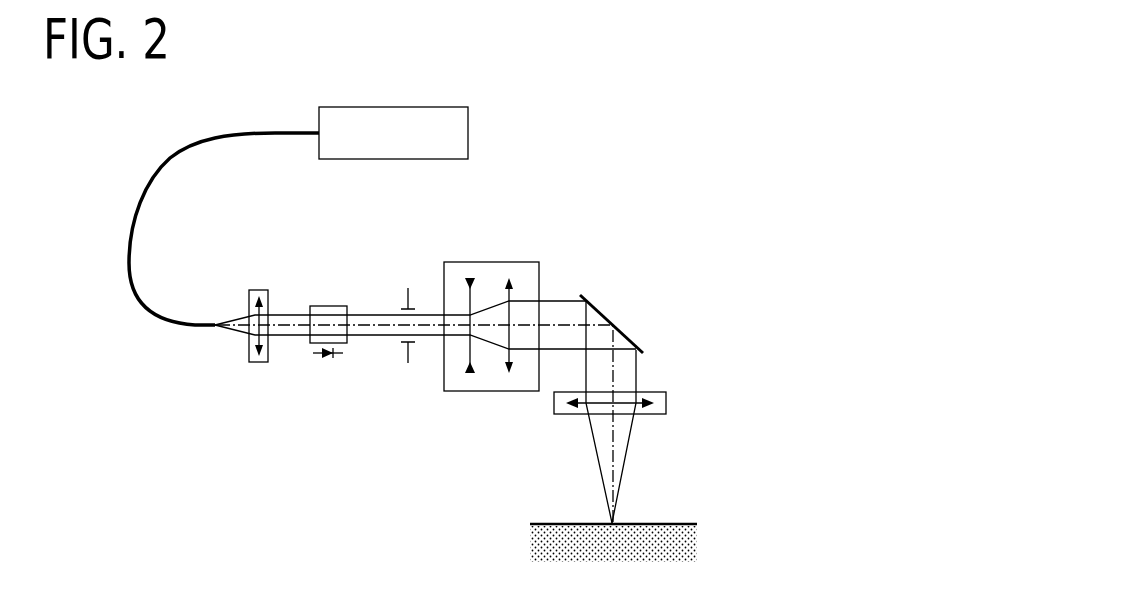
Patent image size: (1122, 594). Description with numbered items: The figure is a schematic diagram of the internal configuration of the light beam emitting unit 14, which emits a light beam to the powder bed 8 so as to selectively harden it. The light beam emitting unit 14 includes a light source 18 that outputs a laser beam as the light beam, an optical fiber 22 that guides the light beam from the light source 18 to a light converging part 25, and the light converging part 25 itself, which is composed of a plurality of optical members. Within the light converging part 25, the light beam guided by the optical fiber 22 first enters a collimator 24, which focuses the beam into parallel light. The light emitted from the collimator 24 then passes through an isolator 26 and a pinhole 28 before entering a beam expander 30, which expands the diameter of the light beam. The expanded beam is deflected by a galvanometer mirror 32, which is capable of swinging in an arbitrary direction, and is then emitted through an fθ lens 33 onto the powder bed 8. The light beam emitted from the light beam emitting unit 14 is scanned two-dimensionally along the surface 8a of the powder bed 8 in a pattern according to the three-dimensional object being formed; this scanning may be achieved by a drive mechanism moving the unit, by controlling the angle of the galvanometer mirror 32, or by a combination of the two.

The powder bed 8 is at (676, 544).
The surface of the powder bed 8a is at (686, 523).
The light beam emitting unit 14 is at (726, 141).
The light source 18 is at (468, 130).
The optical fiber 22 is at (168, 157).
The collimator 24 is at (257, 289).
The light converging part 25 is at (624, 275).
The isolator 26 is at (322, 305).
The pinhole 28 is at (407, 287).
The beam expander 30 is at (482, 261).
The galvanometer mirror 32 is at (638, 338).
The fθ lens 33 is at (659, 391).